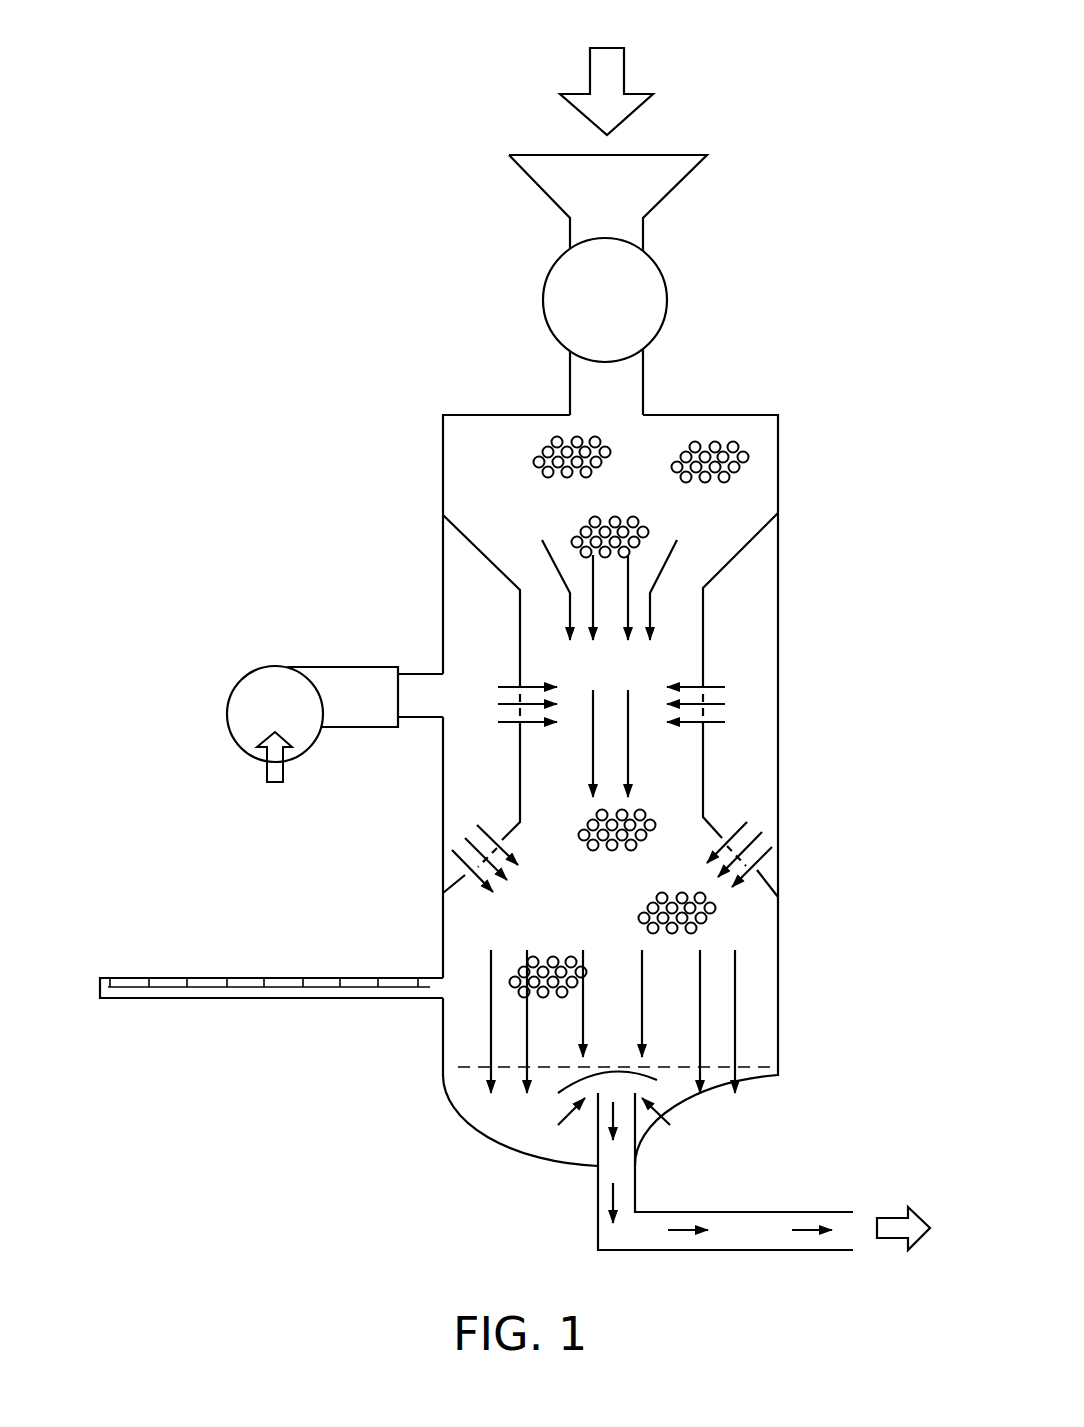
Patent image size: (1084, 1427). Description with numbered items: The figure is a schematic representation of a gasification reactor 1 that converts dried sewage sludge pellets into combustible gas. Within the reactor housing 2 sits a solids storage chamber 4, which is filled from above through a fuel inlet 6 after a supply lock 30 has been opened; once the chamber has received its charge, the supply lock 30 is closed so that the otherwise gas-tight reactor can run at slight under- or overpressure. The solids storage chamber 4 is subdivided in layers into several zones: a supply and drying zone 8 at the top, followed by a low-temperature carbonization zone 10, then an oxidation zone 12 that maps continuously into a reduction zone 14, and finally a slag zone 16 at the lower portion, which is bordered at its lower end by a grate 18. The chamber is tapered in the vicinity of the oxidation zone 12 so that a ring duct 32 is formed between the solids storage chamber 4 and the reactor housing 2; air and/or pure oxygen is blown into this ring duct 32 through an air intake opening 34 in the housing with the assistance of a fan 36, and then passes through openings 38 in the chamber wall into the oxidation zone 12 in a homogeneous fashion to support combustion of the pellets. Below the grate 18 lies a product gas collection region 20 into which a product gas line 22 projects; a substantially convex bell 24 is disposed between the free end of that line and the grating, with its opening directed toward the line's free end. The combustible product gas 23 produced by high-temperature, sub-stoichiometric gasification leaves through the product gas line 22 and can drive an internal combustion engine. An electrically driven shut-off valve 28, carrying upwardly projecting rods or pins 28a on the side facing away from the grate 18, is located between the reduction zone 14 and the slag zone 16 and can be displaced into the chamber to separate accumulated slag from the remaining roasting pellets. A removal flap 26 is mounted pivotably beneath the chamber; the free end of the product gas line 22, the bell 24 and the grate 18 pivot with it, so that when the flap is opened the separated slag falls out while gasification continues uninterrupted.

The gasification reactor 1 is at (388, 446).
The reactor housing 2 is at (778, 557).
The solids storage chamber 4 is at (703, 612).
The fuel inlet 6 is at (613, 80).
The supply and drying zone 8 is at (545, 472).
The low-temperature carbonization zone 10 is at (608, 597).
The oxidation zone 12 is at (572, 693).
The reduction zone 14 is at (545, 918).
The slag zone 16 is at (545, 1033).
The grate 18 is at (708, 1067).
The product gas collection region 20 is at (542, 1125).
The product gas line 22 is at (750, 1228).
The combustible product gas 23 is at (893, 1230).
The convex bell 24 is at (657, 1080).
The removal flap 26 is at (470, 1120).
The shut-off valve 28 is at (242, 980).
The rods or pins 28a is at (338, 980).
The supply lock 30 is at (638, 312).
The ring duct 32 is at (757, 663).
The air intake opening 34 is at (425, 702).
The fan 36 is at (267, 690).
The openings 38 is at (725, 687).